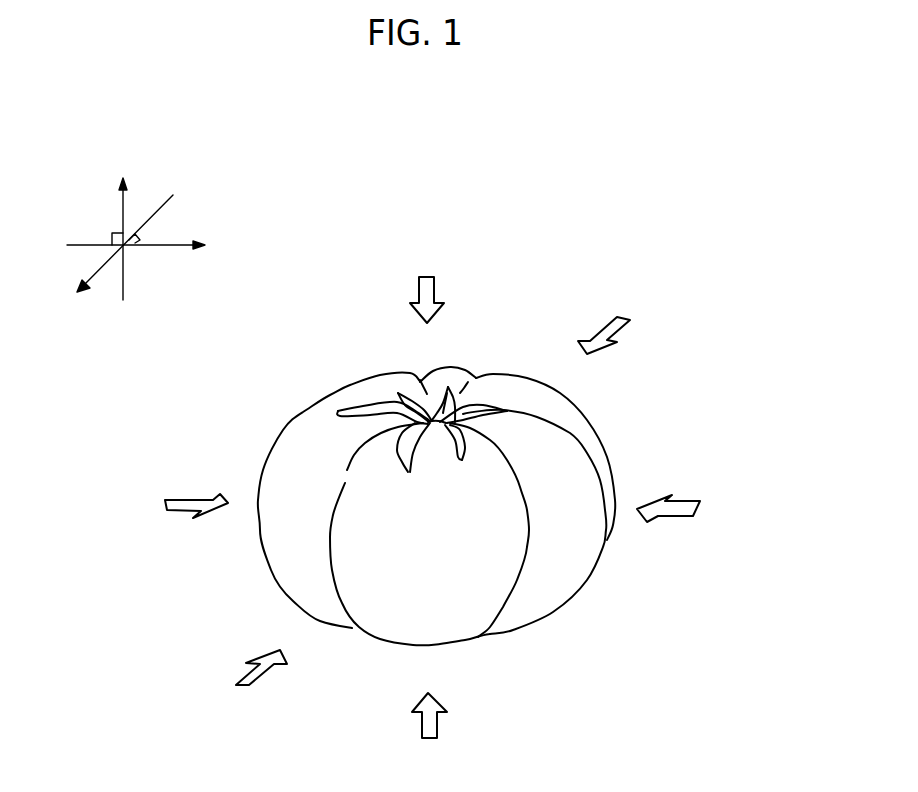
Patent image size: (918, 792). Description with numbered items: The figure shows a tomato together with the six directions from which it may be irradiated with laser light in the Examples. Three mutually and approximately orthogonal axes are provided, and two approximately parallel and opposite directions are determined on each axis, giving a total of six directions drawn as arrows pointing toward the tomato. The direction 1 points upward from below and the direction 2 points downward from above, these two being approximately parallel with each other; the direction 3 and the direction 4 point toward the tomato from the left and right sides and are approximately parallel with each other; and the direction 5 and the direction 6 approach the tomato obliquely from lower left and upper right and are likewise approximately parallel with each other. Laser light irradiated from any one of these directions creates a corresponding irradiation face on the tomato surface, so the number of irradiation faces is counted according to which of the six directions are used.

The direction 1 is at (426, 733).
The direction 2 is at (426, 282).
The direction 3 is at (123, 506).
The direction 4 is at (743, 506).
The direction 5 is at (241, 684).
The direction 6 is at (623, 320).